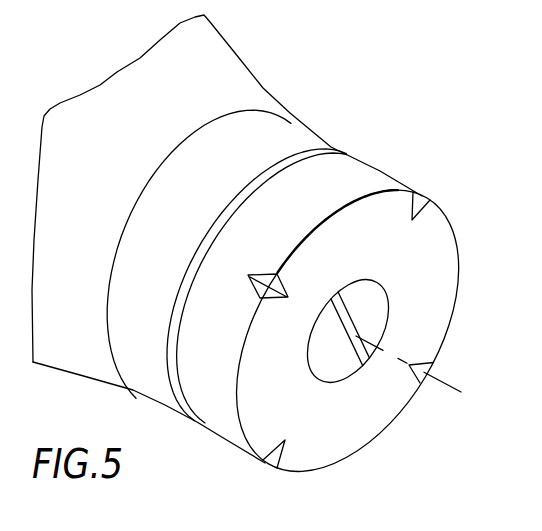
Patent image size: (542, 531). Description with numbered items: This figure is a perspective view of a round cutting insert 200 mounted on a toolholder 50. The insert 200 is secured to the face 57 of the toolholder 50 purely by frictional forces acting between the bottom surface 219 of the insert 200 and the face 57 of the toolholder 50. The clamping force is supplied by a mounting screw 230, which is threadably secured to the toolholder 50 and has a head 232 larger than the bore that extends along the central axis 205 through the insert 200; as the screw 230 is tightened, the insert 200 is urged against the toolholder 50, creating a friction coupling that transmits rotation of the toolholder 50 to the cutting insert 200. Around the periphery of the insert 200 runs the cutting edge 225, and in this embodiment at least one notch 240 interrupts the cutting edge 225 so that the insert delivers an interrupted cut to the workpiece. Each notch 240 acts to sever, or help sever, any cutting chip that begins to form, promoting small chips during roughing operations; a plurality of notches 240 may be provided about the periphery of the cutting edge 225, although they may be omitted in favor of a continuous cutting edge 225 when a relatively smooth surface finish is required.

The toolholder 50 is at (208, 41).
The face 57 is at (312, 153).
The bottom surface 219 is at (182, 327).
The cutting insert 200 is at (447, 257).
The cutting edge 225 is at (334, 212).
The notch 240 is at (258, 289).
The mounting screw 230 is at (382, 326).
The head 232 is at (354, 296).
The central axis 205 is at (467, 393).